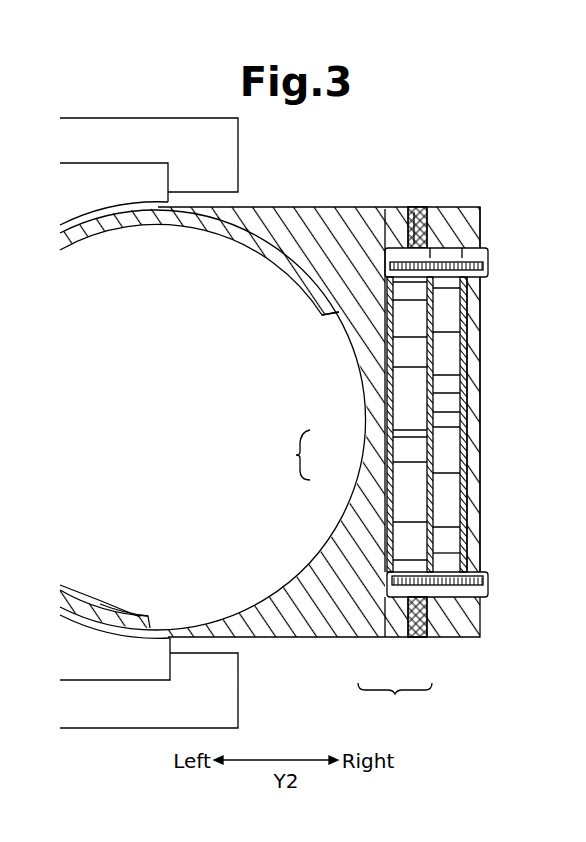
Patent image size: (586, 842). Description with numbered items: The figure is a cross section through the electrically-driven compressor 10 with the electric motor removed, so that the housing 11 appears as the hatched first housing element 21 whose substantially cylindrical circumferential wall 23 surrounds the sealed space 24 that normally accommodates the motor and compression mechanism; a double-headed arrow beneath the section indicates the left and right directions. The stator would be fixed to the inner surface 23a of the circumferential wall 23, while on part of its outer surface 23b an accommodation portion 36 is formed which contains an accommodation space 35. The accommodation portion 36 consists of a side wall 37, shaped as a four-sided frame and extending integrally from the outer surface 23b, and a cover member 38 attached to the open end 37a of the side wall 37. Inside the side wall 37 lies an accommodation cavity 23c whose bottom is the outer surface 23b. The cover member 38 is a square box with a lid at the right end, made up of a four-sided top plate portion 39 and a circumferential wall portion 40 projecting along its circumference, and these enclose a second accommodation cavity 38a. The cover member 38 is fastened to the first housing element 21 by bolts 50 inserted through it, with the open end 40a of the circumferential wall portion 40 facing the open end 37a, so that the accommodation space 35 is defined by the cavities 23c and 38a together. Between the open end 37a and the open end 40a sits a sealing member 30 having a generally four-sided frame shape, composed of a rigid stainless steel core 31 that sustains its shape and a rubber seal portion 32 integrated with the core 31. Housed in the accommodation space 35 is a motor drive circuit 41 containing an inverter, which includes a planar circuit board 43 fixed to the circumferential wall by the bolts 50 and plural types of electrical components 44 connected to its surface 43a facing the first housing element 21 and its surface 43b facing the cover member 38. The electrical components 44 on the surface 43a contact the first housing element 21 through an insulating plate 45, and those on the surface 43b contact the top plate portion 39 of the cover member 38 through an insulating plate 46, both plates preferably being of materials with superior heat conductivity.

The electrically-driven compressor 10 is at (343, 168).
The housing 11 is at (149, 423).
The first housing element 21 is at (283, 222).
The circumferential wall 23 is at (160, 615).
The inner surface of the circumferential wall 23a is at (228, 607).
The outer surface of the circumferential wall 23b is at (140, 632).
The accommodation cavity 23c is at (395, 437).
The sealed space 24 is at (213, 420).
The sealing member 30 is at (395, 700).
The core 31 is at (390, 640).
The seal portion 32 is at (416, 640).
The accommodation space 35 is at (287, 455).
The accommodation portion 36 is at (445, 599).
The side wall 37 is at (389, 209).
The open end of the side wall 37a is at (412, 208).
The cover member 38 is at (480, 228).
The accommodation cavity 38a is at (393, 462).
The top plate portion 39 is at (478, 372).
The circumferential wall portion 40 is at (460, 209).
The open end of the circumferential wall portion 40a is at (421, 210).
The motor drive circuit 41 is at (442, 440).
The circuit board 43 is at (470, 345).
The surface of the circuit board facing the first housing element 43a is at (390, 372).
The surface of the circuit board facing the cover member 43b is at (470, 292).
The electrical components 44 is at (388, 310).
The insulating plate 45 is at (387, 296).
The insulating plate 46 is at (470, 553).
The bolts 50 is at (490, 584).